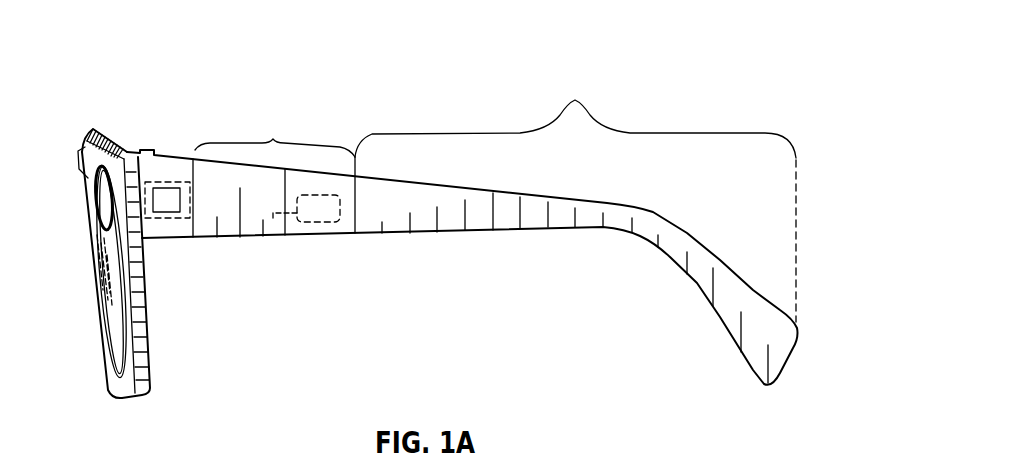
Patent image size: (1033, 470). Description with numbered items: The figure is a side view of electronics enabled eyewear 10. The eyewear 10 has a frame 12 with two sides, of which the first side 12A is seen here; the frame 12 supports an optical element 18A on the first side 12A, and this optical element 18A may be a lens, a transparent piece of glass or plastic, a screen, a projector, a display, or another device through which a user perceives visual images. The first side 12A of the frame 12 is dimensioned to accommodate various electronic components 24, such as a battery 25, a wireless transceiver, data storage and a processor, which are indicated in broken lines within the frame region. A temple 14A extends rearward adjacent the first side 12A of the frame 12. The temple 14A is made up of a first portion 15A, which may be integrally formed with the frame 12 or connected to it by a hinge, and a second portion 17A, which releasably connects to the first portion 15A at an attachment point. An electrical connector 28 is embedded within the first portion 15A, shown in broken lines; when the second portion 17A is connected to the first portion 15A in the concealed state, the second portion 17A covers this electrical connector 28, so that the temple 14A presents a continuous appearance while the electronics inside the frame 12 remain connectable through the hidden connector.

The eyewear 10 is at (635, 50).
The frame 12 is at (108, 127).
The first side 12A is at (155, 151).
The temple 14A is at (603, 210).
The first portion 15A is at (274, 170).
The second portion 17A is at (575, 194).
The optical element 18A is at (109, 328).
The electronic components 24 is at (170, 220).
The battery 25 is at (172, 203).
The electrical connector 28 is at (325, 223).